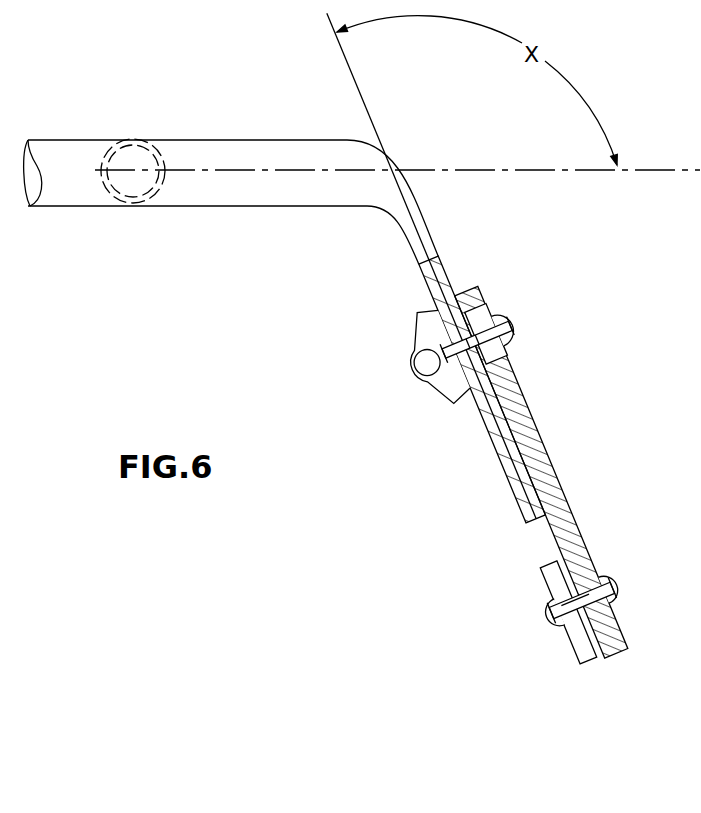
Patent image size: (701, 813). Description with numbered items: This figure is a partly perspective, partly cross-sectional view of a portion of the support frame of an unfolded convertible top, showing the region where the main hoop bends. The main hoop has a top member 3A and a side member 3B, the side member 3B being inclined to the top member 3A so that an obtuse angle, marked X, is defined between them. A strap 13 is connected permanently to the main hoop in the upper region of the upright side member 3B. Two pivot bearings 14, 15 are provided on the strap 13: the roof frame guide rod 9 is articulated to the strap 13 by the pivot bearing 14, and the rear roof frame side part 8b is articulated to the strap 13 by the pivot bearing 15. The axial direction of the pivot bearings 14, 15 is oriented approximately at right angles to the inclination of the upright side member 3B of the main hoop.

The top member 3A is at (333, 146).
The side member 3B is at (522, 500).
The strap 13 is at (530, 420).
The pivot bearing 14 is at (480, 328).
The roof frame guide rod 9 is at (455, 405).
The pivot bearing 15 is at (585, 588).
The rear roof frame side part 8b is at (581, 650).